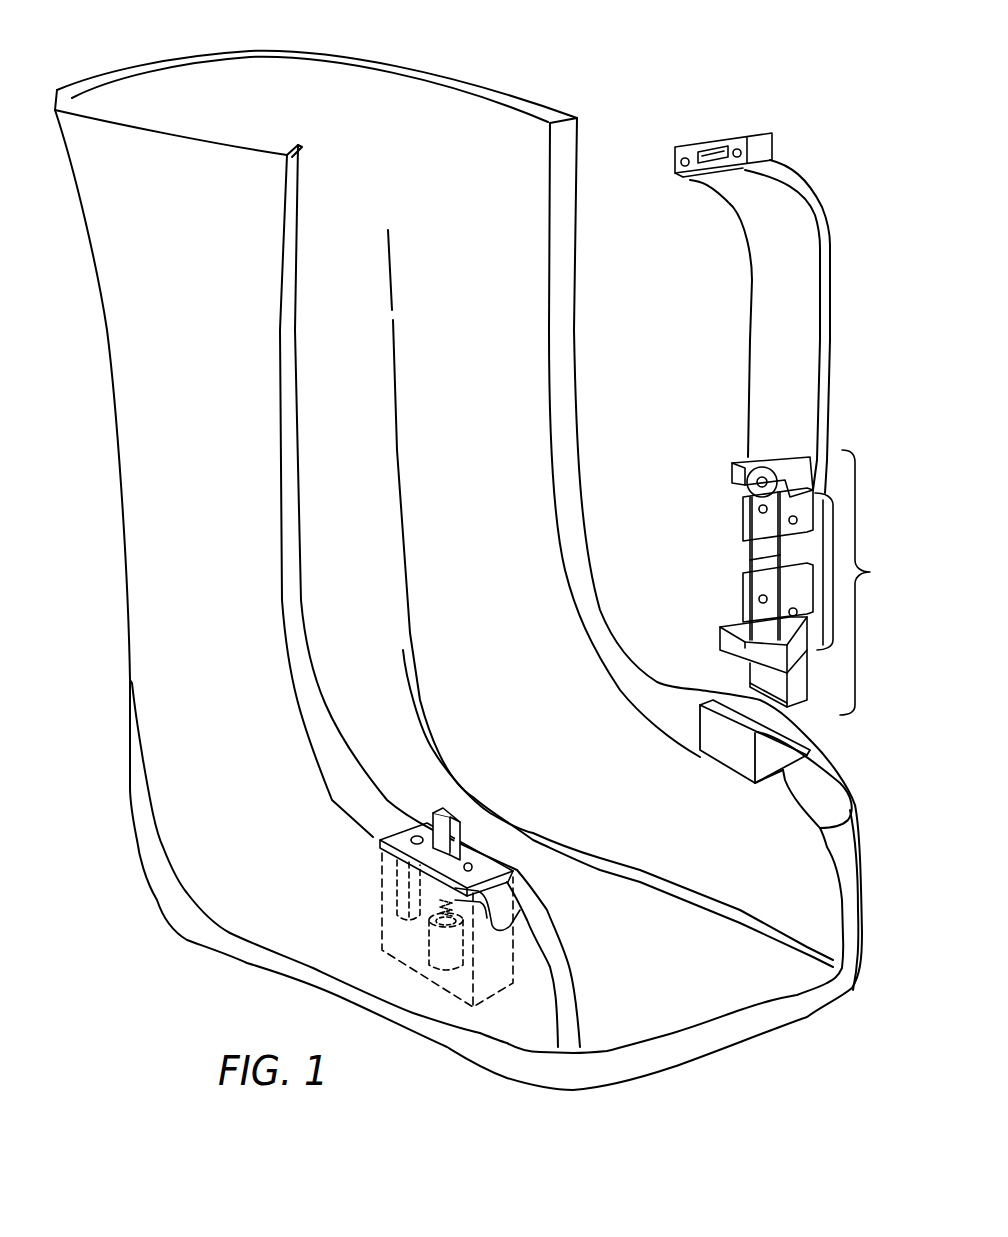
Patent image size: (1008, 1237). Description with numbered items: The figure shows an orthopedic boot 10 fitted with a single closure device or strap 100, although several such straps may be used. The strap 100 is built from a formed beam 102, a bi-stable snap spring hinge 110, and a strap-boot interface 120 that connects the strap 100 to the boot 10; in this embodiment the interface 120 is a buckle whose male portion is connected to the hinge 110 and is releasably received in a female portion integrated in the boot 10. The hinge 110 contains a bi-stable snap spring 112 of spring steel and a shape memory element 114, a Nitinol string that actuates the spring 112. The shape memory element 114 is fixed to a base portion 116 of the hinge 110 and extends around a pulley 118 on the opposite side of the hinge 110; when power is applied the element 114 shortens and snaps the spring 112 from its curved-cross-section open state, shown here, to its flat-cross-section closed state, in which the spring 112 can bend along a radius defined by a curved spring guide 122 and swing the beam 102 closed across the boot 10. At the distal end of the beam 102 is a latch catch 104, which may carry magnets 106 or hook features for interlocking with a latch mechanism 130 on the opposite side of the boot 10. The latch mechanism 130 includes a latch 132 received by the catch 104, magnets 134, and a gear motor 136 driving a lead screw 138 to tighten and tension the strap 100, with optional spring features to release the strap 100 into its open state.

The orthopedic boot 10 is at (157, 385).
The closure device or strap 100 is at (818, 172).
The formed beam 102 is at (781, 243).
The latch catch 104 is at (718, 140).
The magnets 106 is at (680, 164).
The bi-stable snap spring hinge 110 is at (778, 579).
The bi-stable snap spring 112 is at (827, 575).
The shape memory element 114 is at (742, 556).
The base portion 116 is at (723, 638).
The pulley 118 is at (755, 465).
The strap-boot interface 120 is at (750, 677).
The spring guide 122 is at (712, 735).
The latch mechanism 130 is at (380, 873).
The latch 132 is at (447, 810).
The magnets 134 is at (471, 864).
The gear motor 136 is at (420, 935).
The lead screw 138 is at (490, 930).